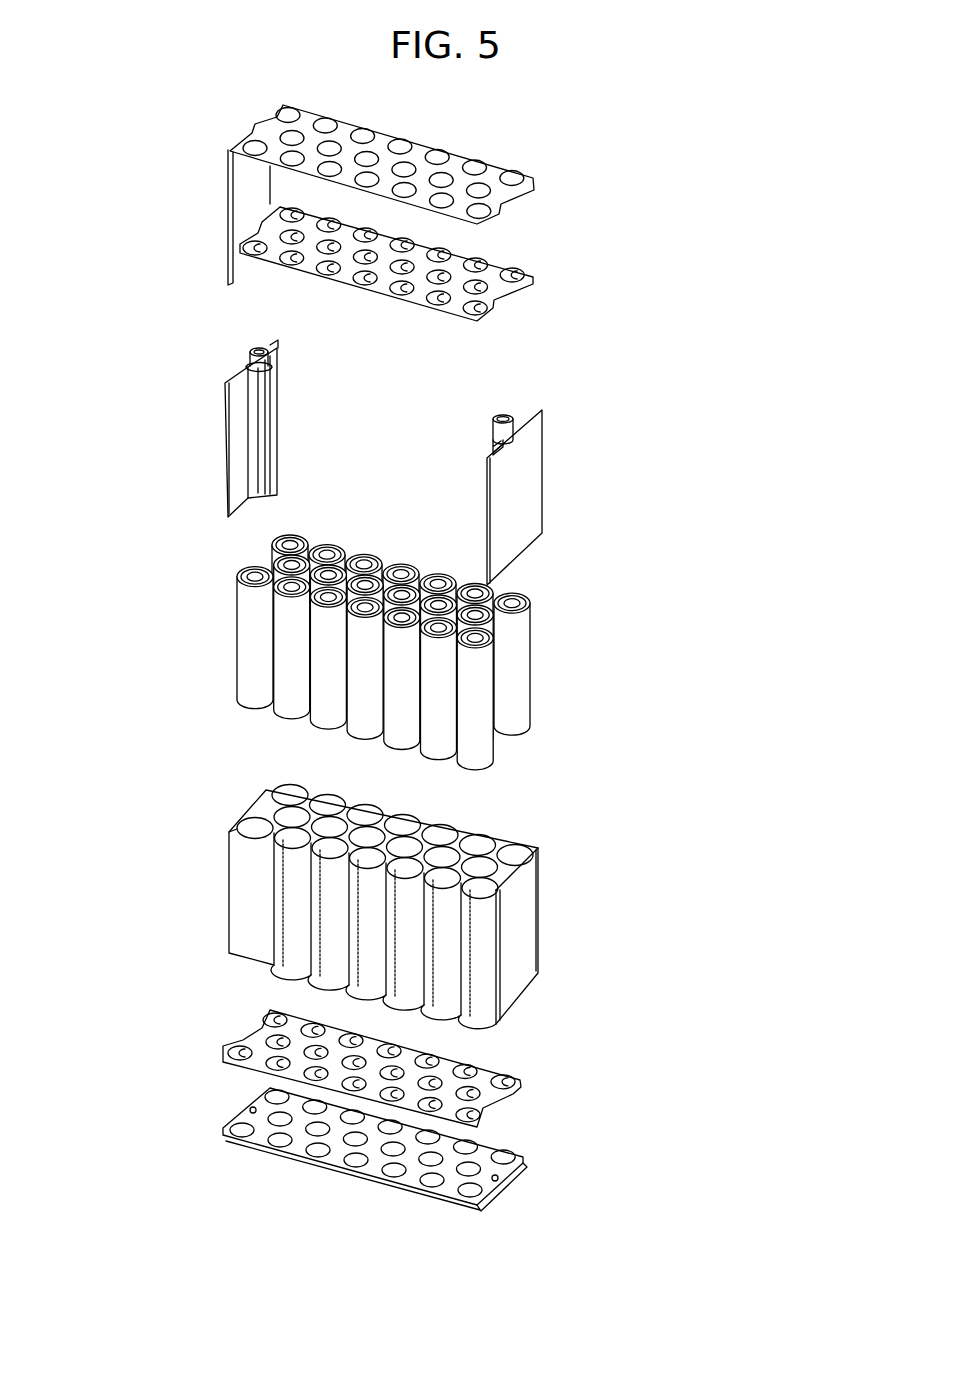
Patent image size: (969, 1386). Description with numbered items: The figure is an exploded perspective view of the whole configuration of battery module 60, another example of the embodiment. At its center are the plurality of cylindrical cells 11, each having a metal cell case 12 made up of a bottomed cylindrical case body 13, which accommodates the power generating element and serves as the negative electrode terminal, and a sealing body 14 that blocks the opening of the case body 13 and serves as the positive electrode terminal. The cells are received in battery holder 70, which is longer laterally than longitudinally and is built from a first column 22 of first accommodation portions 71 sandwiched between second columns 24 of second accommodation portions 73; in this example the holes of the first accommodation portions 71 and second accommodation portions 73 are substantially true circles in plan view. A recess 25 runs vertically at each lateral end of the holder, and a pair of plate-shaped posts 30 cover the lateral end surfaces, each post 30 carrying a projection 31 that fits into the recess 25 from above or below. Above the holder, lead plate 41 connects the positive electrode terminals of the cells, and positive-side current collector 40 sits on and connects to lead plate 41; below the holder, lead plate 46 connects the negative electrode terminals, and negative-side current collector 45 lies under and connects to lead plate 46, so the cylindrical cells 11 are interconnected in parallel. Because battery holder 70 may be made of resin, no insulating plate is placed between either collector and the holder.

The battery module 60 is at (558, 104).
The positive-side current collector 40 is at (281, 112).
The lead plate 41 is at (275, 255).
The post 30 is at (227, 448).
The projection 31 is at (272, 437).
The cylindrical cell 11 is at (523, 644).
The cell case 12 is at (137, 541).
The case body 13 is at (250, 618).
The sealing body 14 is at (253, 567).
The battery holder 70 is at (558, 848).
The first column 22 is at (268, 812).
The second column 24 is at (236, 825).
The first accommodation portion 71 is at (360, 835).
The second accommodation portion 73 is at (510, 855).
The recess 25 is at (505, 878).
The lead plate 46 is at (521, 1077).
The negative-side current collector 45 is at (523, 1153).